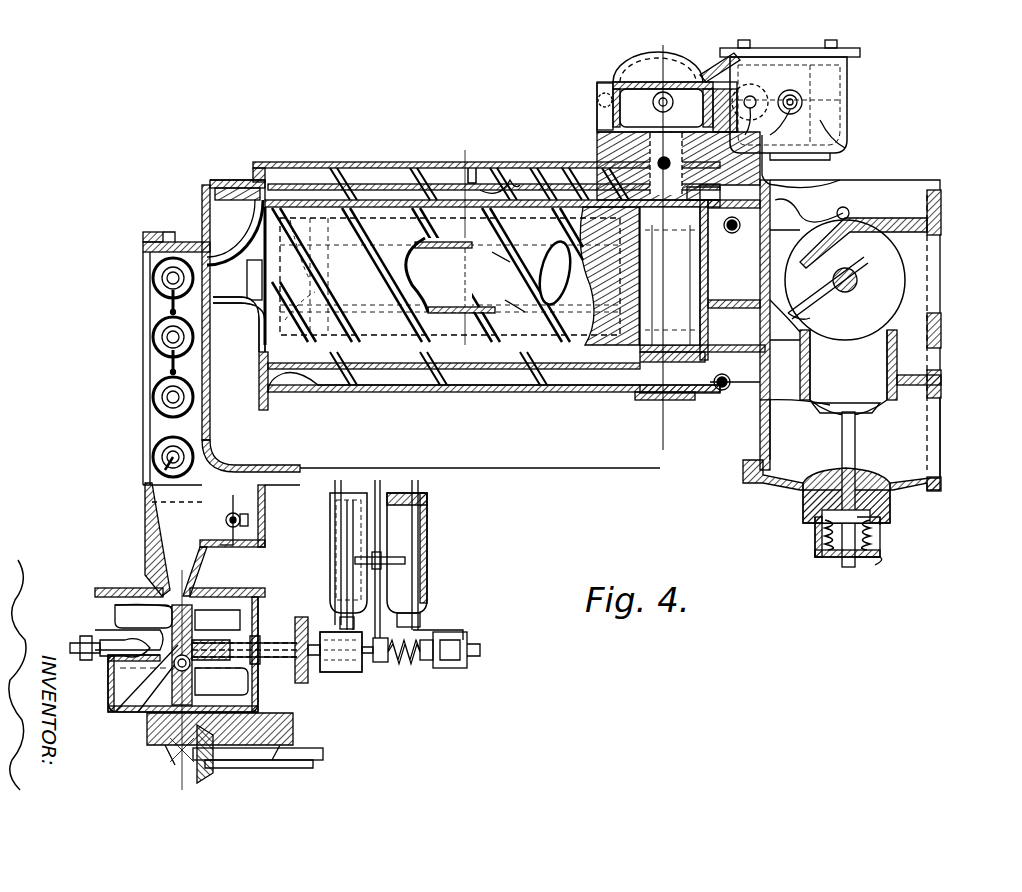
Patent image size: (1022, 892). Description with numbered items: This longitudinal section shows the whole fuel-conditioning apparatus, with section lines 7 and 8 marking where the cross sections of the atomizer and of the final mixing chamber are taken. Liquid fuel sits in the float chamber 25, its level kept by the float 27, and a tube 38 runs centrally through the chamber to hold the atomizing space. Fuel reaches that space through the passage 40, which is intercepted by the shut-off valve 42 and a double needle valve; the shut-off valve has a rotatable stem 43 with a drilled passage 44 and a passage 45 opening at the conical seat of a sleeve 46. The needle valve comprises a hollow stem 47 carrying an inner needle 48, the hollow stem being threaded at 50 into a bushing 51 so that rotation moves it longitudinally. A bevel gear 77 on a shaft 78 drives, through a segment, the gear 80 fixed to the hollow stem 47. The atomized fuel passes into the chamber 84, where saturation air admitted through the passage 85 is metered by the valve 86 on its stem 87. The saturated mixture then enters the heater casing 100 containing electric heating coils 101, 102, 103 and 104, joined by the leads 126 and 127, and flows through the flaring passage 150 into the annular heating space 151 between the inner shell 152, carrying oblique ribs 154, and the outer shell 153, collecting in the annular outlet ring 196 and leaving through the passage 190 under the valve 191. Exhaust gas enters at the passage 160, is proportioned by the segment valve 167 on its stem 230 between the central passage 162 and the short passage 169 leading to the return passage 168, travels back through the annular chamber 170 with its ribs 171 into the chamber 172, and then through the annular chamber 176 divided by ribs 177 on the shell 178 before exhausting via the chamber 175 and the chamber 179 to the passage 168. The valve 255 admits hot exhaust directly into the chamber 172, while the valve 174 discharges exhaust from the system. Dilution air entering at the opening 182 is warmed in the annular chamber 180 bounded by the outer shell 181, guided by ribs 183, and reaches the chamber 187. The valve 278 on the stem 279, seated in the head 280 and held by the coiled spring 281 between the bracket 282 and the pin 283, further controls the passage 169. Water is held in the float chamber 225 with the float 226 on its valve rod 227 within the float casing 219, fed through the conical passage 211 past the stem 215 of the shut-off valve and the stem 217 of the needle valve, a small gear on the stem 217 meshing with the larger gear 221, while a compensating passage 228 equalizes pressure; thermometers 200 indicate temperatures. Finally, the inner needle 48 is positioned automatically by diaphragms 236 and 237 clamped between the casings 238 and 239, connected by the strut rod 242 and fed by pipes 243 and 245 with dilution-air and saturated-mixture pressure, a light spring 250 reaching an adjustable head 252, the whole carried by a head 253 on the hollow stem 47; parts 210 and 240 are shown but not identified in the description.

The section line 7 is at (445, 462).
The section line 8 is at (670, 235).
The float chamber 25 is at (120, 630).
The float 27 is at (125, 620).
The tube 38 is at (205, 612).
The passage 40 is at (148, 625).
The shut-off valve 42 is at (118, 700).
The rotatable stem 43 is at (108, 648).
The passage 44 is at (150, 705).
The passage 45 is at (175, 720).
The sleeve 46 is at (175, 640).
The hollow stem 47 is at (280, 688).
The needle 48 is at (378, 676).
The threaded connection 50 is at (240, 620).
The bushing 51 is at (270, 640).
The bevel gear 77 is at (215, 777).
The shaft 78 is at (265, 760).
The gear 80 is at (300, 683).
The chamber 84 is at (165, 525).
The passage 85 is at (262, 512).
The valve 86 is at (206, 543).
The stem 87 is at (226, 522).
The heater casing 100 is at (165, 415).
The heating coil 101 is at (158, 462).
The heating coil 102 is at (158, 395).
The heating coil 103 is at (160, 335).
The heating coil 104 is at (162, 275).
The lead 126 is at (168, 372).
The lead 127 is at (168, 312).
The flaring passage 150 is at (215, 250).
The annular heating space 151 is at (370, 185).
The inner heating shell 152 is at (405, 195).
The outer shell 153 is at (325, 190).
The oblique ribs 154 is at (345, 258).
The exhaust inlet passage 160 is at (915, 258).
The central passage 162 is at (440, 245).
The segment valve 167 is at (836, 320).
The outlet passage 168 is at (912, 418).
The short passage 169 is at (870, 365).
The annular chamber 170 is at (524, 286).
The oblique ribs 171 is at (562, 258).
The chamber 172 is at (728, 325).
The valve 174 is at (722, 395).
The chamber 175 is at (232, 378).
The annular chamber 176 is at (500, 380).
The oblique ribs 177 is at (560, 200).
The annular shell 178 is at (530, 190).
The chamber 179 is at (215, 205).
The annular chamber 180 is at (290, 180).
The outer shell 181 is at (472, 165).
The opening 182 is at (320, 383).
The oblique ribs 183 is at (488, 185).
The chamber 187 is at (590, 190).
The passage 190 is at (828, 175).
The valve 191 is at (768, 160).
The annular outlet ring 196 is at (665, 225).
The thermometer 200 is at (820, 88).
The dome 210 is at (660, 95).
The conical passage 211 is at (680, 111).
The stem 215 is at (765, 123).
The stem 217 is at (835, 148).
The float casing 219 is at (802, 100).
The gear 221 is at (760, 95).
The float chamber 225 is at (845, 132).
The float 226 is at (852, 60).
The valve rod 227 is at (830, 125).
The compensating passage 228 is at (722, 85).
The stem 230 is at (858, 260).
The diaphragm 236 is at (405, 532).
The diaphragm 237 is at (349, 554).
The casing 238 is at (415, 505).
The casing 239 is at (342, 532).
The pin 240 is at (395, 565).
The strut rod 242 is at (420, 620).
The pipe 243 is at (418, 500).
The pipe 245 is at (337, 502).
The light spring 250 is at (415, 662).
The adjustable head 252 is at (455, 668).
The head 253 is at (345, 672).
The valve 255 is at (812, 209).
The valve 278 is at (375, 520).
The valve stem 279 is at (853, 454).
The head 280 is at (818, 496).
The coiled spring 281 is at (870, 558).
The stationary bracket 282 is at (822, 538).
The pin 283 is at (872, 522).